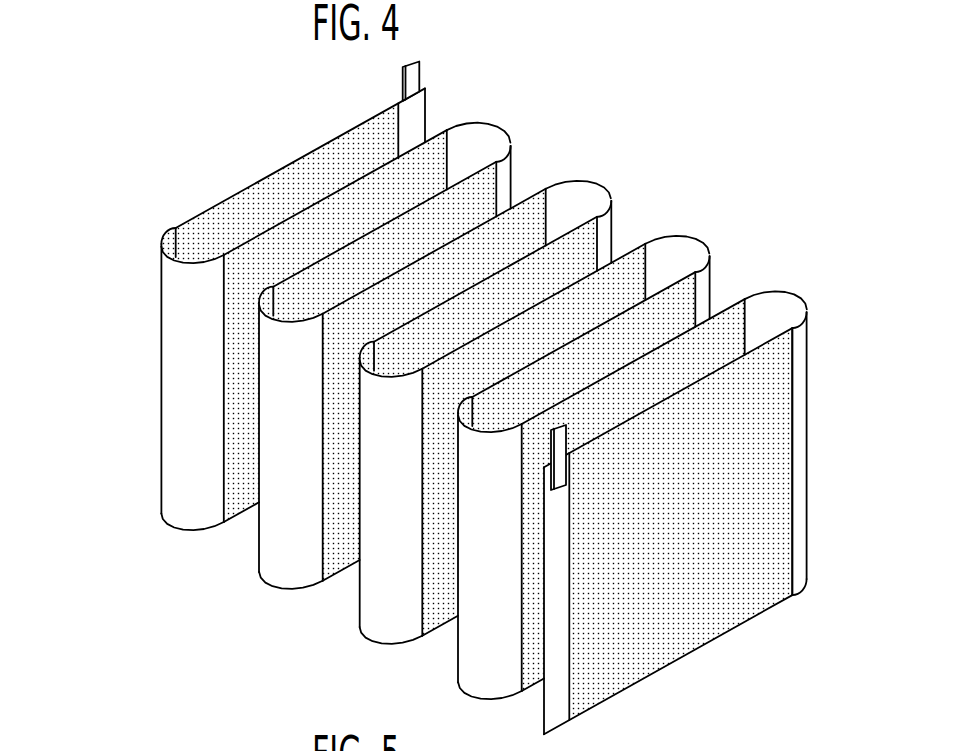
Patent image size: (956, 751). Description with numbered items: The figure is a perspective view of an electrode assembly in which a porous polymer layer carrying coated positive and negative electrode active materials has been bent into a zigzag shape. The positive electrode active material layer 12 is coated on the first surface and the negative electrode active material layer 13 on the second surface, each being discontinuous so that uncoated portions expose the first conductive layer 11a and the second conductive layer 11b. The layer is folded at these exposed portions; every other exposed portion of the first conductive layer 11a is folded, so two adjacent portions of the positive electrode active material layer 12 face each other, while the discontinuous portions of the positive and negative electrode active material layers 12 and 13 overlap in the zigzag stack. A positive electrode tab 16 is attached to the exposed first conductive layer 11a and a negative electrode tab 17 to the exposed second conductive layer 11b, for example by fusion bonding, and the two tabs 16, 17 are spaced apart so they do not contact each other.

The first conductive layer 11a is at (164, 248).
The second conductive layer 11b is at (183, 382).
The positive electrode active material layer 12 is at (325, 158).
The negative electrode active material layer 13 is at (293, 242).
The positive electrode tab 16 is at (410, 78).
The negative electrode tab 17 is at (557, 450).